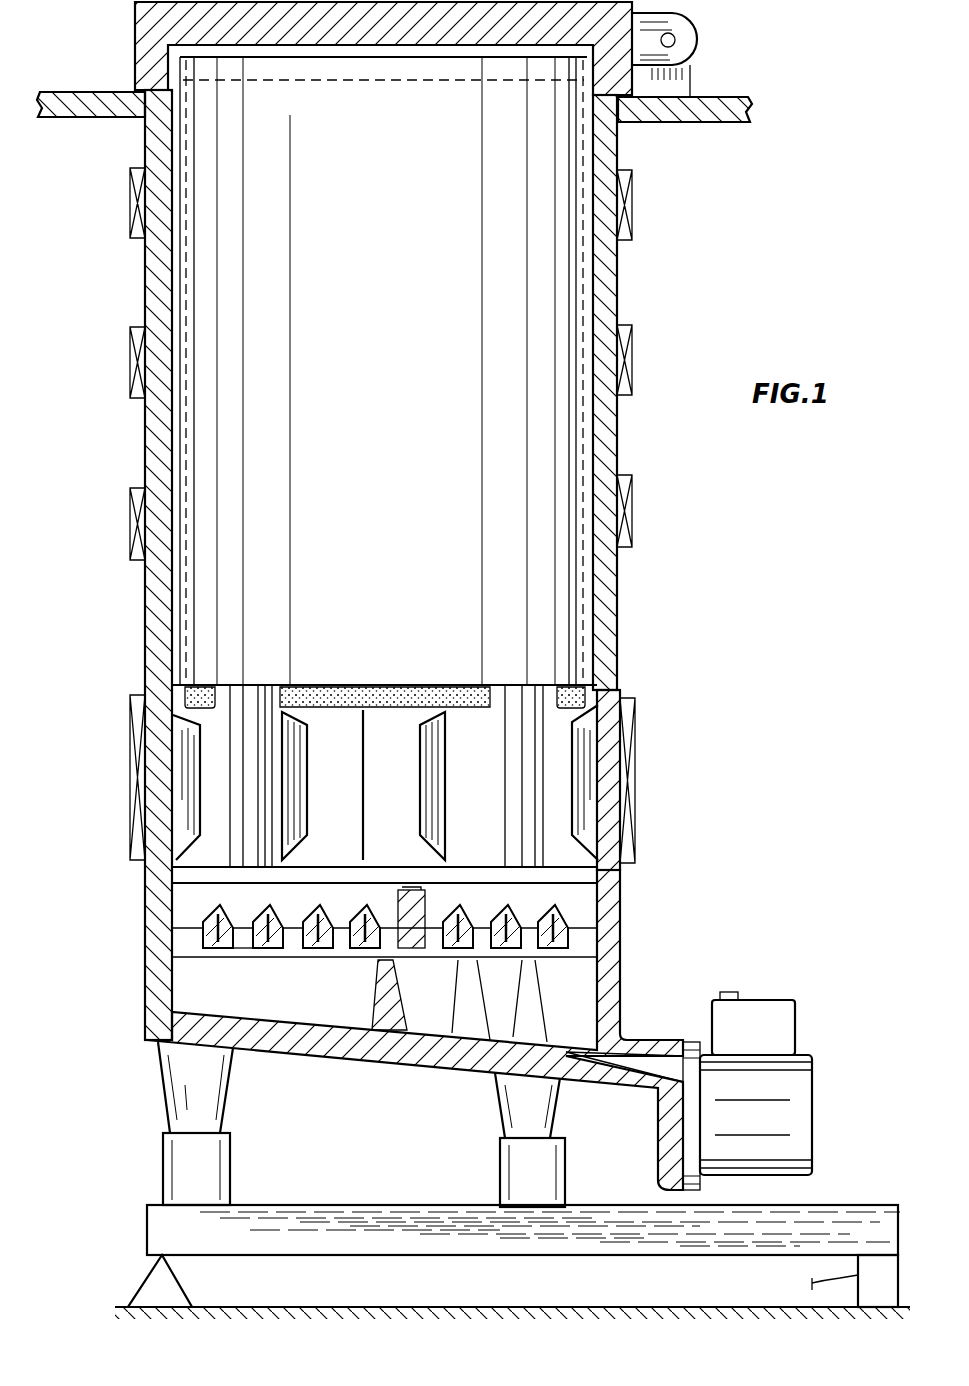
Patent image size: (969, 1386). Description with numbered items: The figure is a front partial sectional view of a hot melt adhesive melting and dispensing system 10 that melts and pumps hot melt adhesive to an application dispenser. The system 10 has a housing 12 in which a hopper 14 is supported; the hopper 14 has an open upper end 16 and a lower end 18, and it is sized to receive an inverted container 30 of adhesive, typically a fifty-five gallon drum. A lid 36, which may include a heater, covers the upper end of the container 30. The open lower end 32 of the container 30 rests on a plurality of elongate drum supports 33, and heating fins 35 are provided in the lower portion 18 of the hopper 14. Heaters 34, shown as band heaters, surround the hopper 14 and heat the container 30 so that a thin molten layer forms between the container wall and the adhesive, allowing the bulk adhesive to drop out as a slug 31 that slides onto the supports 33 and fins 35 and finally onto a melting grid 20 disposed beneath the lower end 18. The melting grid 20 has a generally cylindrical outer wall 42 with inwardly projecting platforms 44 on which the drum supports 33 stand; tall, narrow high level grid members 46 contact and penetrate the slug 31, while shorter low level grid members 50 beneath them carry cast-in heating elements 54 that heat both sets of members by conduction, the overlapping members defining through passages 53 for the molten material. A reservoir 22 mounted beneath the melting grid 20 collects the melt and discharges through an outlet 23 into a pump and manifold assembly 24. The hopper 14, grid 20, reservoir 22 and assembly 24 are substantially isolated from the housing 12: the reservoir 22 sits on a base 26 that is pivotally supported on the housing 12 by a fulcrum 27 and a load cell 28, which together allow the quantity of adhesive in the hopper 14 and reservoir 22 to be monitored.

The hot melt adhesive melting and dispensing system 10 is at (700, 388).
The housing 12 is at (748, 102).
The hopper 14 is at (622, 304).
The open upper end 16 is at (160, 106).
The lower end 18 is at (610, 748).
The melting grid 20 is at (142, 906).
The reservoir 22 is at (212, 992).
The outlet 23 is at (648, 1062).
The pump and manifold assembly 24 is at (832, 1040).
The base 26 is at (385, 1230).
The fulcrum 27 is at (152, 1288).
The load cell 28 is at (873, 1278).
The inverted container 30 is at (404, 337).
The slug 31 is at (302, 688).
The lower end 32 is at (250, 686).
The drum supports 33 is at (252, 770).
The heaters 34 is at (130, 240).
The heating fins 35 is at (185, 795).
The lid 36 is at (160, 25).
The outer wall 42 is at (625, 906).
The platforms 44 is at (172, 877).
The high level grid members 46 is at (368, 897).
The low level grid members 50 is at (293, 936).
The through passages 53 is at (245, 940).
The heating elements 54 is at (447, 938).